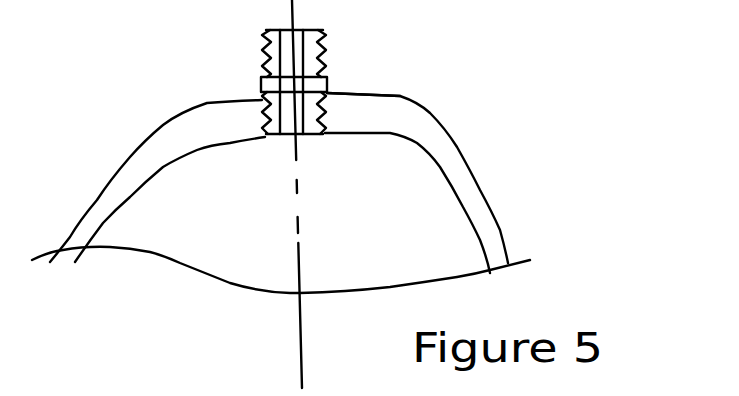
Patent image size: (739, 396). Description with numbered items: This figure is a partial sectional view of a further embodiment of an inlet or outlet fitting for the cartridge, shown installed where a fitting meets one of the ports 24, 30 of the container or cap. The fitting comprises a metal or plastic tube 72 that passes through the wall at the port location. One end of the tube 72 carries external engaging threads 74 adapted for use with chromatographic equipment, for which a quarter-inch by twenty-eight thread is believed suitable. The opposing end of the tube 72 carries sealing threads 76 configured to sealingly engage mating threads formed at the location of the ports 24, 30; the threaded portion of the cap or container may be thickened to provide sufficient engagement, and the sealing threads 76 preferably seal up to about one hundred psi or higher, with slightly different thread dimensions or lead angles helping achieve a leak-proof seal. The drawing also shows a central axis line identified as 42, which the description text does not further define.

The outlet port 24 is at (333, 75).
The inlet port 30 is at (333, 75).
The axis / centerline 42 is at (294, 325).
The tube 72 is at (263, 43).
The engaging threads 74 is at (260, 88).
The sealing threads 76 is at (323, 120).